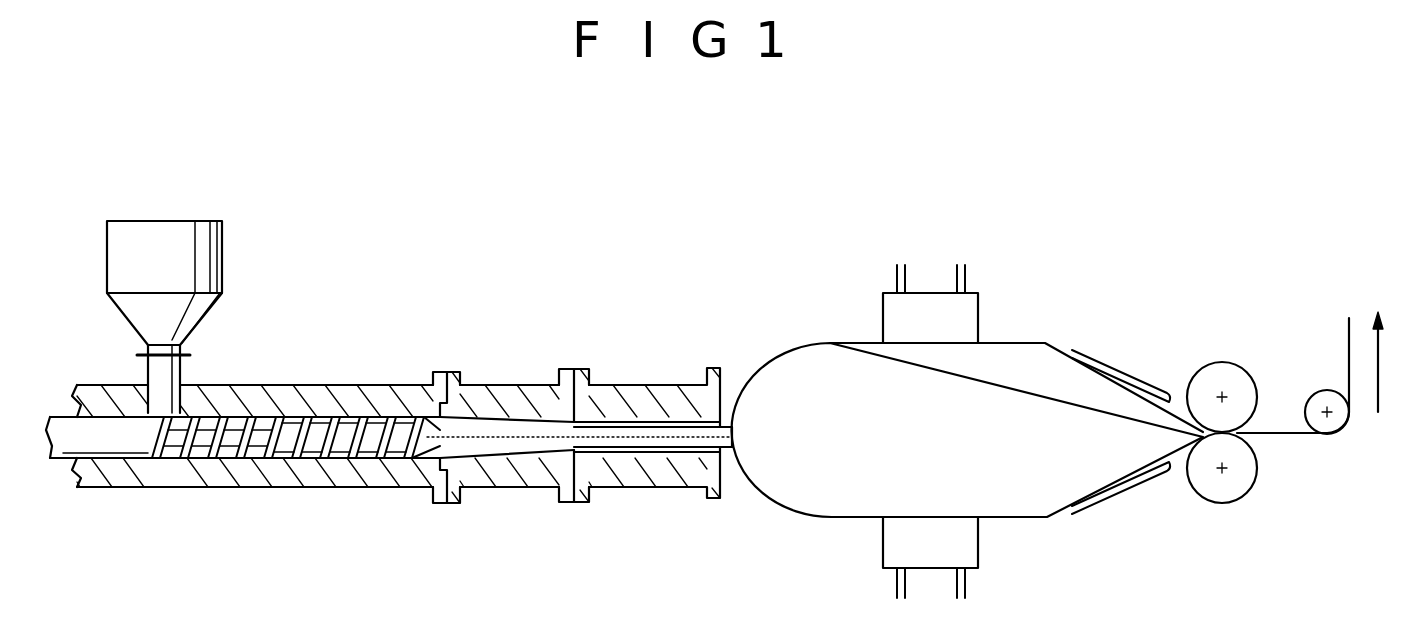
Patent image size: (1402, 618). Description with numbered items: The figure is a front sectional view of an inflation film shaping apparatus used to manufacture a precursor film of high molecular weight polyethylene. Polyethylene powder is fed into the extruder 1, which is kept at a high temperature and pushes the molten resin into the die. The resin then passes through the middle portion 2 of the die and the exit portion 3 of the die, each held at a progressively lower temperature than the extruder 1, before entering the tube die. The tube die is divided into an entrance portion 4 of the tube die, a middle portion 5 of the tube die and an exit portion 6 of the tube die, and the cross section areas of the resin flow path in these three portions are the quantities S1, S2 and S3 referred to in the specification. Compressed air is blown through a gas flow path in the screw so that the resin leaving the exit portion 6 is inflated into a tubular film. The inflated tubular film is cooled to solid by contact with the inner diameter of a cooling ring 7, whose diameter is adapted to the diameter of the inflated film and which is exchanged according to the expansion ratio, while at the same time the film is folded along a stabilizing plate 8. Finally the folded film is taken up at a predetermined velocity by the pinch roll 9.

The extruder 1 is at (315, 385).
The central portion of die 2 is at (526, 385).
The exit portion of die 3 is at (650, 385).
The inlet portion of tube die 4 is at (466, 487).
The central portion of tube die 5 is at (596, 487).
The outlet portion of tube die 6 is at (724, 462).
The cooling ring 7 is at (978, 320).
The stabilizing plate 8 is at (1142, 380).
The pinch roll 9 is at (1240, 364).